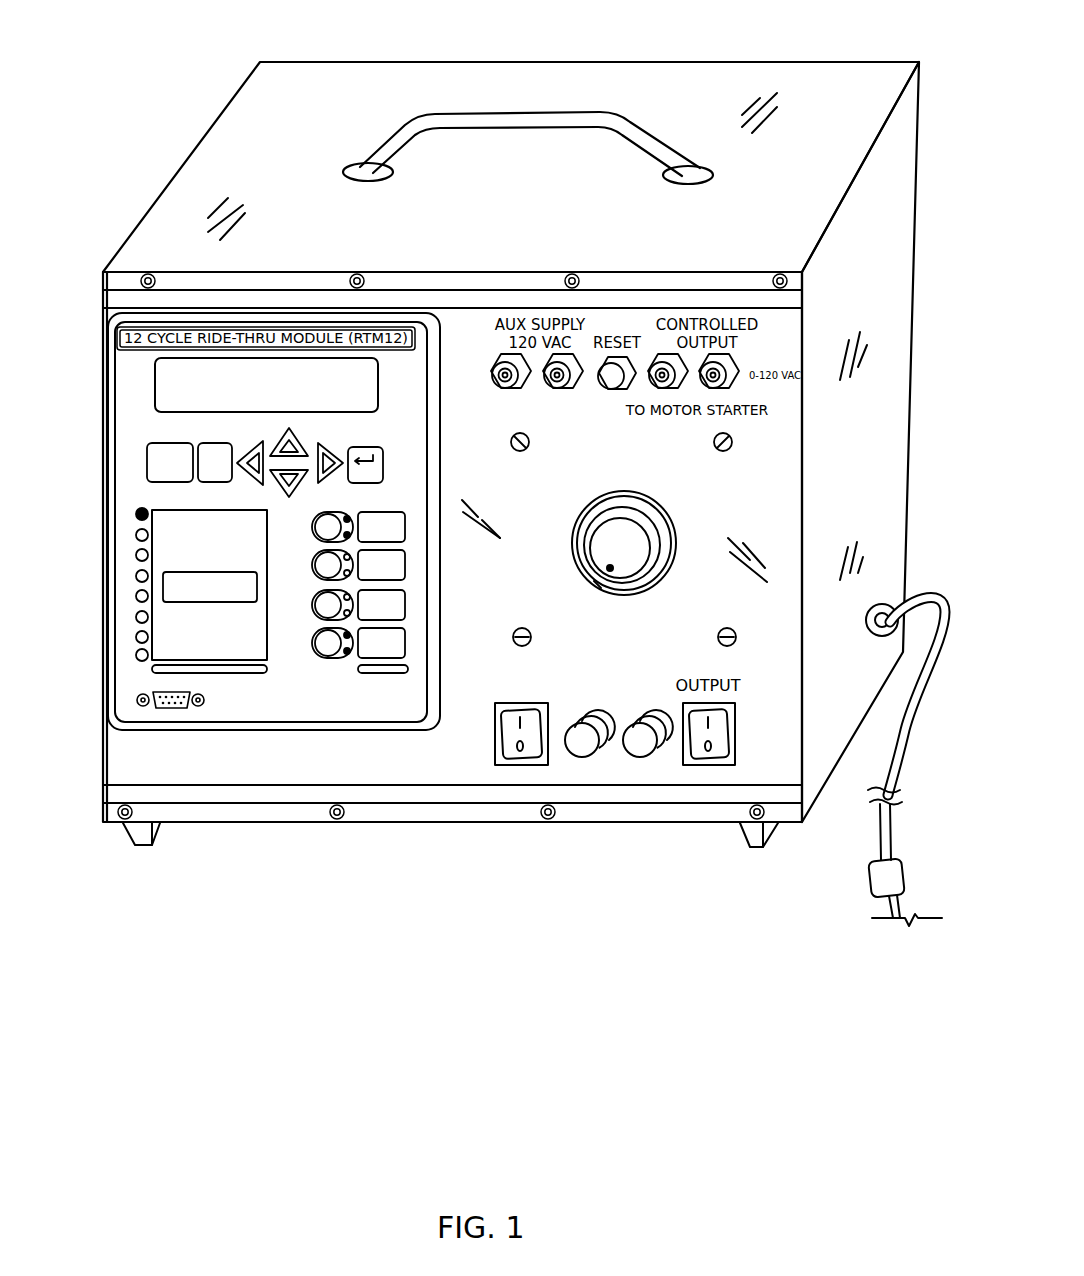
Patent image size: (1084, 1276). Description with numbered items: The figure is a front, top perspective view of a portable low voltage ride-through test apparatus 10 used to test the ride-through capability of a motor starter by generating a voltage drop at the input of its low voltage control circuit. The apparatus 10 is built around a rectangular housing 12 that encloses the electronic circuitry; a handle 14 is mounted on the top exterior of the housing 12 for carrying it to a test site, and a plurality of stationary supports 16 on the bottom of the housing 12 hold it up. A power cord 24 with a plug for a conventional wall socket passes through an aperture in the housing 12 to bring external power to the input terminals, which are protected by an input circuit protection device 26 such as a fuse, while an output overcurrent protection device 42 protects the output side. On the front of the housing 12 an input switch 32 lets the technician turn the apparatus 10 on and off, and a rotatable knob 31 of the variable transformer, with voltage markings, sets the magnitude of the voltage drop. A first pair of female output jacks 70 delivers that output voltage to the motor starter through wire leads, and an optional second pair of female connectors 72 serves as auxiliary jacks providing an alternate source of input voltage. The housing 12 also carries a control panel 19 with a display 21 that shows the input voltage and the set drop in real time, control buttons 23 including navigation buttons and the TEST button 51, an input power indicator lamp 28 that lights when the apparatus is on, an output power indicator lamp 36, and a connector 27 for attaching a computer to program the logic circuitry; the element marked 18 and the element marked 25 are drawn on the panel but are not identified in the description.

The low voltage ride-through test apparatus 10 is at (148, 1032).
The housing 12 is at (213, 118).
The handle 14 is at (595, 112).
The supports 16 is at (772, 837).
The ride-thru module lower edge 18 is at (222, 732).
The control panel 19 is at (451, 534).
The display 21 is at (162, 385).
The control buttons 23 is at (95, 500).
The power cord 24 is at (905, 755).
The voltage dip indicator 25 is at (103, 614).
The input circuit protection device 26 is at (638, 757).
The connector 27 is at (137, 700).
The input power indicator lamp 28 is at (353, 512).
The knob 31 is at (673, 523).
The input switch 32 is at (527, 760).
The output power indicator lamp 36 is at (340, 660).
The output overcurrent protection device 42 is at (578, 757).
The TEST button 51 is at (152, 463).
The first pair of female output jacks 70 is at (759, 350).
The second pair of female connectors 72 is at (587, 342).